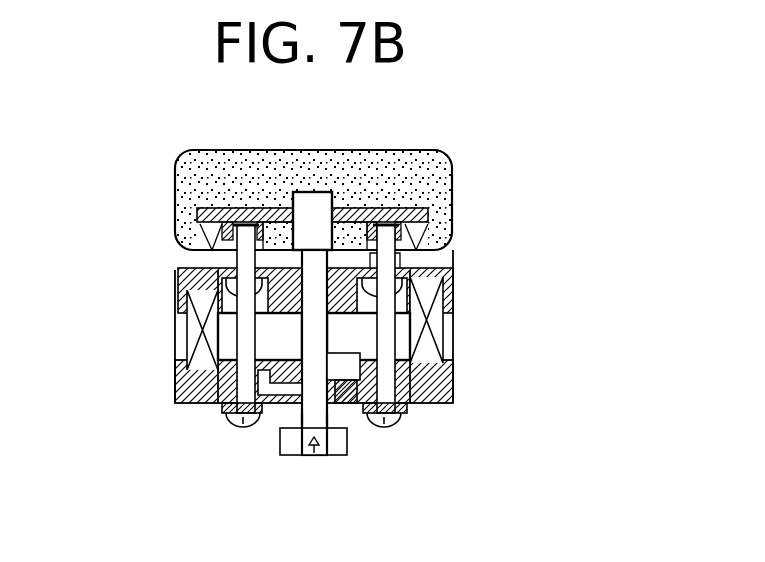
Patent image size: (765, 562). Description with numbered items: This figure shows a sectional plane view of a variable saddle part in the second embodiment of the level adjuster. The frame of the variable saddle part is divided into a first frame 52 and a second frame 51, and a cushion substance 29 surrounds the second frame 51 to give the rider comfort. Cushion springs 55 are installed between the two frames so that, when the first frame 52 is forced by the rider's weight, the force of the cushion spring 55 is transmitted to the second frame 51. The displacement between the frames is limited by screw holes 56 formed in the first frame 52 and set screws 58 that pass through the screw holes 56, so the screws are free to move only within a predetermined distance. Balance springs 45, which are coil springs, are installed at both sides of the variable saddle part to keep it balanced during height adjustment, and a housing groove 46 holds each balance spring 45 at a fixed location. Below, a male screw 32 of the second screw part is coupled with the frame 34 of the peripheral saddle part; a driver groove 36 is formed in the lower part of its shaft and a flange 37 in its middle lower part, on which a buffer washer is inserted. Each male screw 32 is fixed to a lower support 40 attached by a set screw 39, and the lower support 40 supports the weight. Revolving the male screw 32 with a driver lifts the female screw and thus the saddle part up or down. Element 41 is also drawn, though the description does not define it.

The cushion substance 29 is at (433, 172).
The second frame 51 is at (427, 214).
The cushion spring 55 is at (425, 245).
The set screw 58 is at (400, 262).
The first frame 52 is at (453, 280).
The screw hole 56 is at (442, 292).
The frame 34 is at (453, 372).
The lower support 40 is at (392, 412).
The bolt 41 is at (225, 406).
The balance spring 45 is at (205, 336).
The housing groove 46 is at (205, 347).
The set screw 39 is at (400, 410).
The flange 37 is at (283, 400).
The driver groove 36 is at (317, 455).
The male screw 32 is at (350, 418).